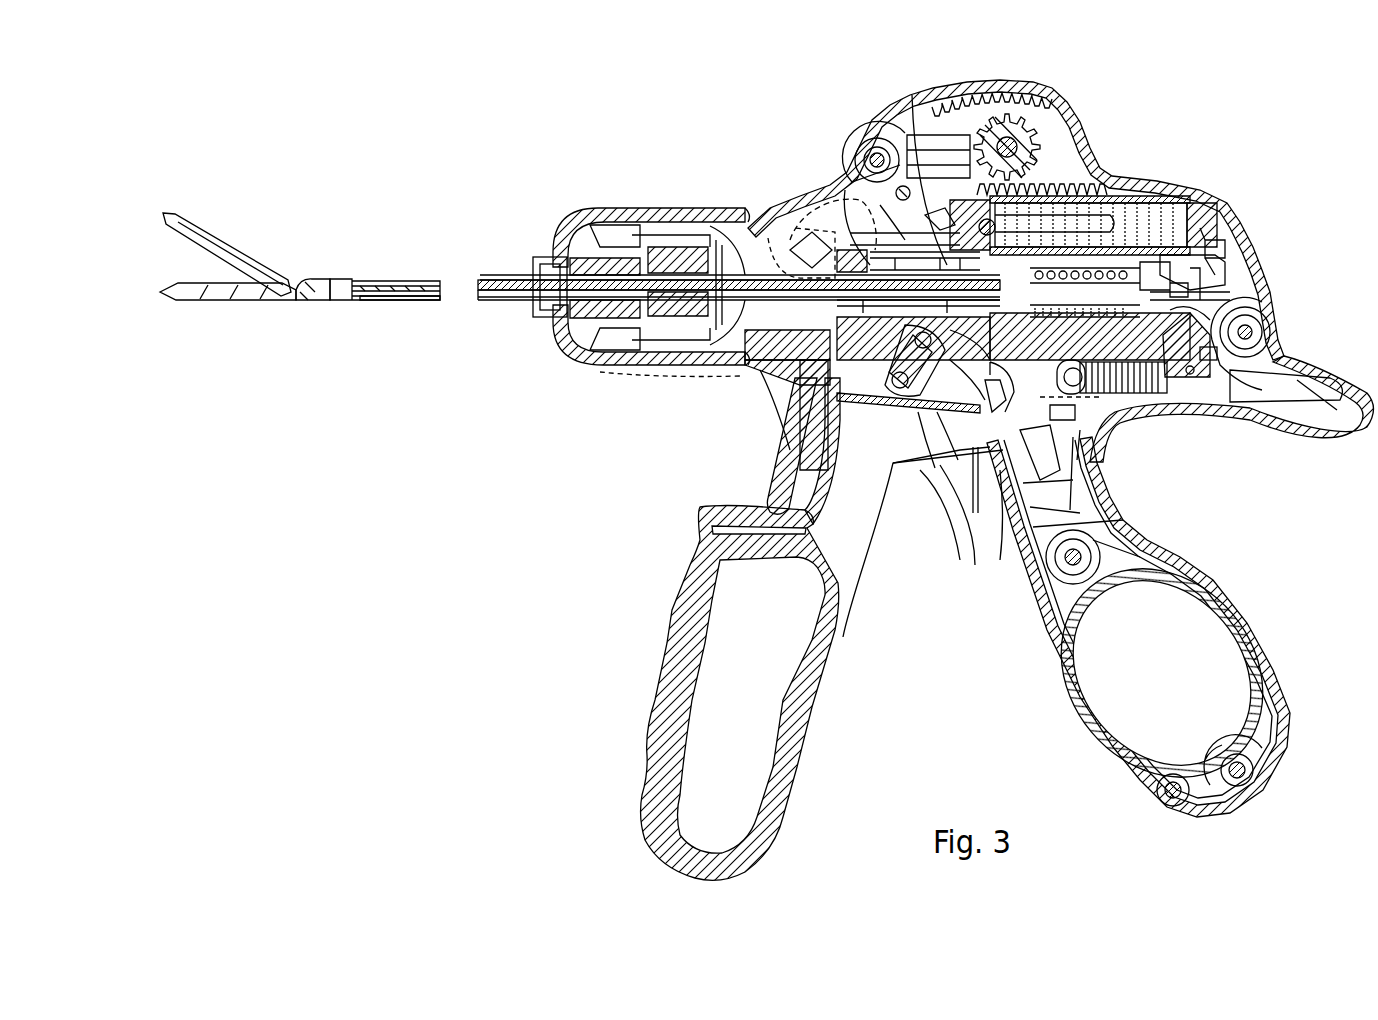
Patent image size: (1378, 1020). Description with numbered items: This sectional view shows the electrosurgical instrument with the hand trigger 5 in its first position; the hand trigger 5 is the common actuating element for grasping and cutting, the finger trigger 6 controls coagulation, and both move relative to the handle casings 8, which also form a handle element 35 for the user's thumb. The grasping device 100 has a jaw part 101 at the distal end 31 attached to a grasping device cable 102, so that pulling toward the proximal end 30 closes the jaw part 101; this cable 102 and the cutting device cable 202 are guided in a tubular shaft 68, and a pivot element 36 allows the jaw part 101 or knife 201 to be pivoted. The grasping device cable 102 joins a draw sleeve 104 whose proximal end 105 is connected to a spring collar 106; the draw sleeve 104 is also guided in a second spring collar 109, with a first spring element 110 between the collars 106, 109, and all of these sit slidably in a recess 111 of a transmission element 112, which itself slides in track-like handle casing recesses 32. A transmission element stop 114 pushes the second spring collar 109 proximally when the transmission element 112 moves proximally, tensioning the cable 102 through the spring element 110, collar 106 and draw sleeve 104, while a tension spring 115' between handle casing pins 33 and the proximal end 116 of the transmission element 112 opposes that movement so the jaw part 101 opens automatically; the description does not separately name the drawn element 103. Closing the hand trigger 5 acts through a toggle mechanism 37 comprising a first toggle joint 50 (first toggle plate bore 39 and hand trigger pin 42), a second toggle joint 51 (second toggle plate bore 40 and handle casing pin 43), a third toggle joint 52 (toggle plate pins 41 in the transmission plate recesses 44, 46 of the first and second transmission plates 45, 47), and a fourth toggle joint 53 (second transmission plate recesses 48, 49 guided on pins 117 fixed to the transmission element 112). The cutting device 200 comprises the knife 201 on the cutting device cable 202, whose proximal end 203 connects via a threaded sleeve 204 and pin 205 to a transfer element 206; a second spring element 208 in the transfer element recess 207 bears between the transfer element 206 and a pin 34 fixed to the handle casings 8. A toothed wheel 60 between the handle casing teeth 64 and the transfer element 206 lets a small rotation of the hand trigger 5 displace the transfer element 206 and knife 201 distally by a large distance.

The hand trigger 5 is at (800, 748).
The finger trigger 6 is at (751, 454).
The handle casings 8 is at (1305, 438).
The proximal end 30 is at (1029, 273).
The distal end 31 is at (297, 284).
The handle casing recesses 32 is at (1173, 385).
The handle casing pins 33 is at (1072, 416).
The pin 34 is at (878, 135).
The handle element 35 is at (1073, 624).
The pivot element 36 is at (690, 207).
The toggle mechanism 37 is at (913, 399).
The first toggle plate bore 39 is at (751, 454).
The second toggle plate bore 40 is at (892, 399).
The toggle plate pins 41 is at (927, 538).
The hand trigger pin 42 is at (751, 454).
The handle casing pin 43 is at (892, 399).
The first transmission plate recess 44 is at (927, 538).
The first transmission plate 45 is at (999, 543).
The transmission plate recess 46 is at (927, 538).
The second transmission plate 47 is at (1000, 560).
The second transmission plate recess 48 is at (757, 400).
The second transmission plate recess 49 is at (757, 400).
The first toggle joint 50 is at (792, 440).
The second toggle joint 51 is at (900, 390).
The third toggle joint 52 is at (950, 478).
The fourth toggle joint 53 is at (774, 413).
The toothed wheel 60 is at (1045, 90).
The handle casing teeth 64 is at (967, 128).
The tubular shaft 68 is at (512, 303).
The grasping device 100 is at (252, 237).
The jaw part 101 is at (217, 288).
The grasping device cable 102 is at (383, 298).
The drive block 103 is at (1080, 345).
The draw sleeve 104 is at (1228, 246).
The proximal end 105 is at (1262, 338).
The spring collar 106 is at (1221, 378).
The second spring collar 109 is at (987, 230).
The first spring element 110 is at (1103, 194).
The recess 111 is at (1073, 386).
The transmission element 112 is at (1015, 405).
The transmission element stop 114 is at (1065, 378).
The return spring 115' is at (1103, 410).
The proximal end 116 is at (1213, 395).
The pins 117 is at (757, 400).
The cutting device 200 is at (312, 264).
The knife 201 is at (345, 275).
The cutting device cable 202 is at (515, 276).
The proximal end 203 is at (870, 238).
The threaded sleeve 204 is at (860, 188).
The pin 205 is at (938, 235).
The transfer element 206 is at (912, 102).
The transfer element recess 207 is at (1205, 225).
The second spring element 208 is at (1118, 205).